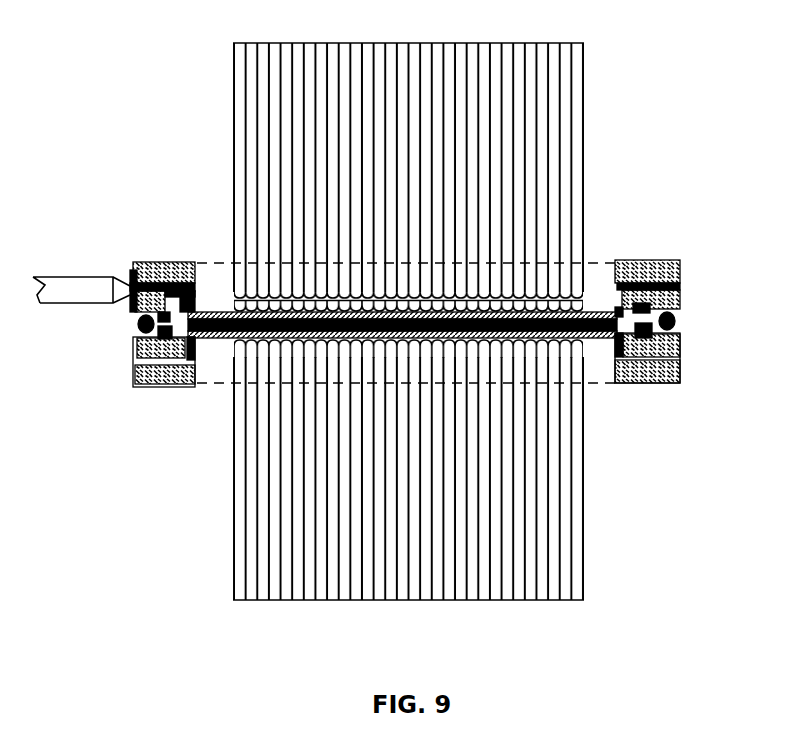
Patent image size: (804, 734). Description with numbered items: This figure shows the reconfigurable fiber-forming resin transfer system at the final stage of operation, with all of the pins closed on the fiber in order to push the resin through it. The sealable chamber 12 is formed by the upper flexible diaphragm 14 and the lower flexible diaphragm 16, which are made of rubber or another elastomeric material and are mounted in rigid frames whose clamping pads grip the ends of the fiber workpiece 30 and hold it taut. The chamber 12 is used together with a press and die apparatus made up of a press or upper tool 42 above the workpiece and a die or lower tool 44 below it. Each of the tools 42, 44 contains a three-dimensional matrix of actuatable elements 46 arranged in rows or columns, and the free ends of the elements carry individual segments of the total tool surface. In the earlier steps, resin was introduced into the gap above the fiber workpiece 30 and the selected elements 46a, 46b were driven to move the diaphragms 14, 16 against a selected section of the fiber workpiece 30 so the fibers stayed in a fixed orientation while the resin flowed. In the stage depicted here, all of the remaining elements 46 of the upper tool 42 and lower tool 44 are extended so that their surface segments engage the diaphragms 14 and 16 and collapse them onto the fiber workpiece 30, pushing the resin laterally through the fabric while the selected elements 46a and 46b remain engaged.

The sealable chamber 12 is at (118, 242).
The upper flexible diaphragm 14 is at (596, 312).
The lower flexible diaphragm 16 is at (595, 338).
The fiber workpiece 30 is at (235, 340).
The press or upper tool 42 is at (212, 142).
The die or lower tool 44 is at (608, 444).
The actuatable elements 46 is at (401, 337).
The selected actuatable element 46a is at (320, 305).
The selected actuatable element 46b is at (320, 345).